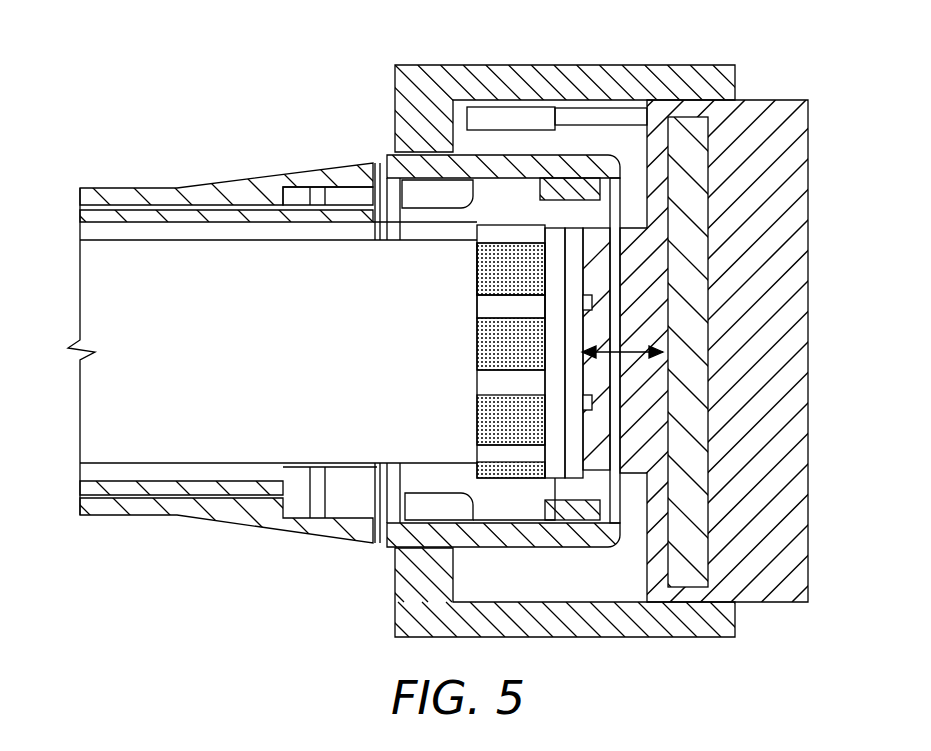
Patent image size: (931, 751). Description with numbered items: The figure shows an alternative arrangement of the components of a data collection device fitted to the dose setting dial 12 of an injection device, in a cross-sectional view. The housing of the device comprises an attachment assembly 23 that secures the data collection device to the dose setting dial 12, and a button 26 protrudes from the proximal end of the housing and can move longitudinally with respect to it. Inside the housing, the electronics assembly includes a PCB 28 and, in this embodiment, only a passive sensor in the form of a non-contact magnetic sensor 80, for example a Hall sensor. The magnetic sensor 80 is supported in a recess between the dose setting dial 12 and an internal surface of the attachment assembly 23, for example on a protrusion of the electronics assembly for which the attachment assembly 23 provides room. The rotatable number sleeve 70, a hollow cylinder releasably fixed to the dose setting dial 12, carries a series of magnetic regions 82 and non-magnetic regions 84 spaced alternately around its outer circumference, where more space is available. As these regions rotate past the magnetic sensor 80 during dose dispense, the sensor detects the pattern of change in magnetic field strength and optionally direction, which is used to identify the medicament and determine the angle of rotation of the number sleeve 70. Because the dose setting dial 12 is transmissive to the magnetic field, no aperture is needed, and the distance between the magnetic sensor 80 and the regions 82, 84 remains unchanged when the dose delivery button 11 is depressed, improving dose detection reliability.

The attachment assembly 23 is at (395, 75).
The dose setting dial 12 is at (390, 160).
The magnetic sensor 80 is at (507, 107).
The magnetic regions 82 is at (477, 262).
The non-magnetic regions 84 is at (490, 300).
The number sleeve 70 is at (477, 351).
The dose delivery button 11 is at (552, 490).
The PCB 28 is at (668, 575).
The button 26 is at (808, 378).